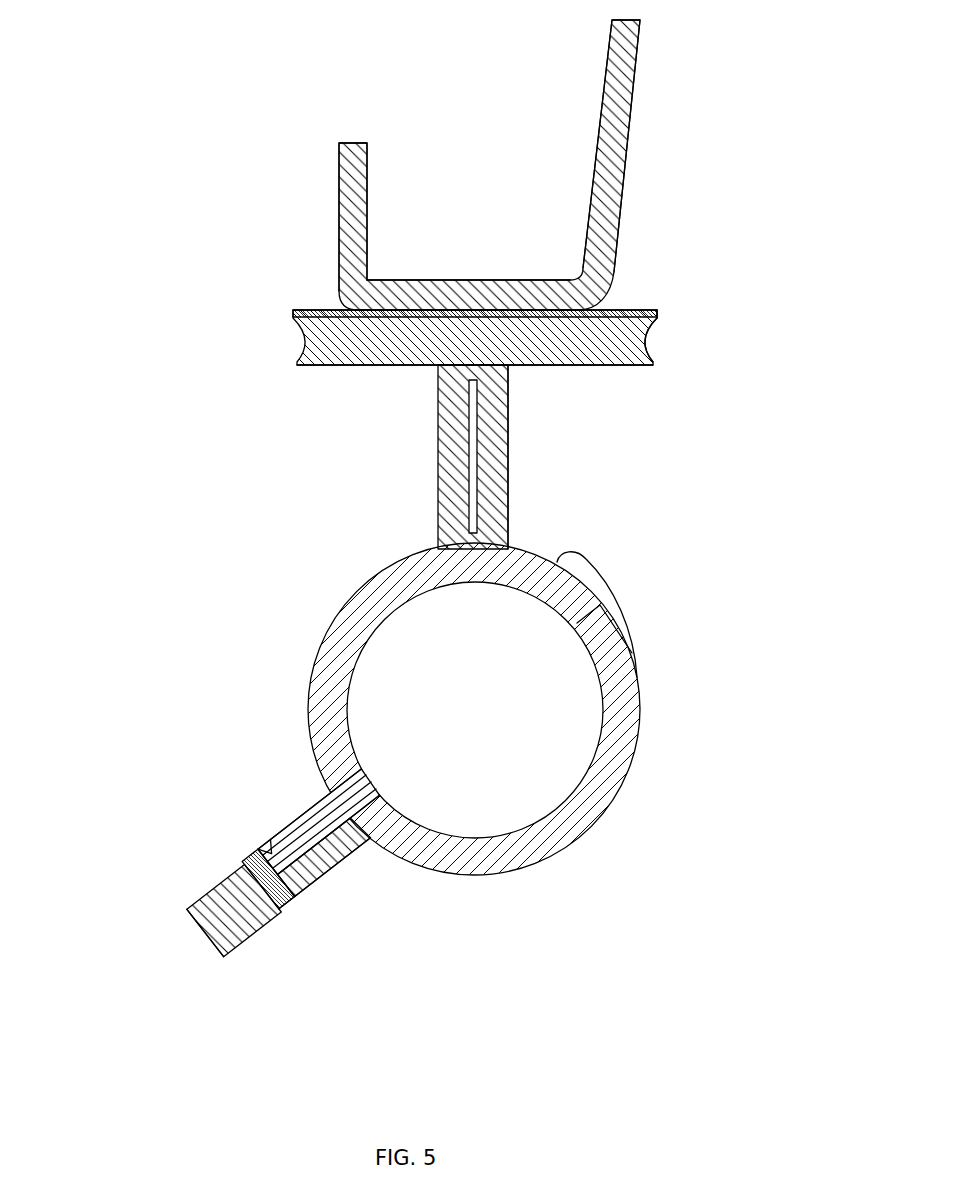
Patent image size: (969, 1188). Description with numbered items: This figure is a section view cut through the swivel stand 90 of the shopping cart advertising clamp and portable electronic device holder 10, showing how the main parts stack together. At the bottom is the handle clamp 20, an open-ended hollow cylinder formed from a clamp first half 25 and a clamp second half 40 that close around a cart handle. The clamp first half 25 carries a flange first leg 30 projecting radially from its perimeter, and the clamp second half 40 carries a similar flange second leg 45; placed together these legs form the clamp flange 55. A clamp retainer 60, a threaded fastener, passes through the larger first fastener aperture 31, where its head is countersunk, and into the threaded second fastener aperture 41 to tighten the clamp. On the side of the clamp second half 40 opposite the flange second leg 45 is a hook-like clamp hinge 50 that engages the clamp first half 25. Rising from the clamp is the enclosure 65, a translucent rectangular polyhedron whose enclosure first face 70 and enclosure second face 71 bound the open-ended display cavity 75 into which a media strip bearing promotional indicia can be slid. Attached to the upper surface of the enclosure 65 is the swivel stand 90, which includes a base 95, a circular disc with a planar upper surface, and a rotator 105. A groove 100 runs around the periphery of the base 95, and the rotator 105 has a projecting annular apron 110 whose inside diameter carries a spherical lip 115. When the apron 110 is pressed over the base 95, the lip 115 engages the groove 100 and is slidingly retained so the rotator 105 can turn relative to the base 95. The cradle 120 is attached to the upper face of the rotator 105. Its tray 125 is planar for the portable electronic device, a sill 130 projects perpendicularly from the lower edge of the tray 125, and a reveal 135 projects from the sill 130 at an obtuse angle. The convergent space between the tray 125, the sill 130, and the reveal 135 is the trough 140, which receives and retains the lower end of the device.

The shopping cart advertising clamp and portable electronic device holder 10 is at (168, 288).
The handle clamp 20 is at (429, 799).
The clamp first half 25 is at (507, 709).
The flange first leg 30 is at (310, 810).
The first fastener aperture 31 is at (204, 926).
The clamp second half 40 is at (618, 765).
The second fastener aperture 41 is at (283, 910).
The flange second leg 45 is at (345, 870).
The clamp hinge 50 is at (598, 573).
The clamp flange 55 is at (222, 957).
The clamp retainer 60 is at (247, 862).
The enclosure 65 is at (559, 457).
The enclosure first face 70 is at (484, 457).
The enclosure second face 71 is at (556, 457).
The display cavity 75 is at (475, 480).
The swivel stand 90 is at (451, 358).
The base 95 is at (375, 357).
The groove 100 is at (458, 331).
The rotator 105 is at (624, 314).
The apron 110 is at (658, 323).
The lip 115 is at (654, 342).
The cradle 120 is at (526, 165).
The tray 125 is at (607, 108).
The sill 130 is at (408, 290).
The reveal 135 is at (338, 185).
The trough 140 is at (490, 259).